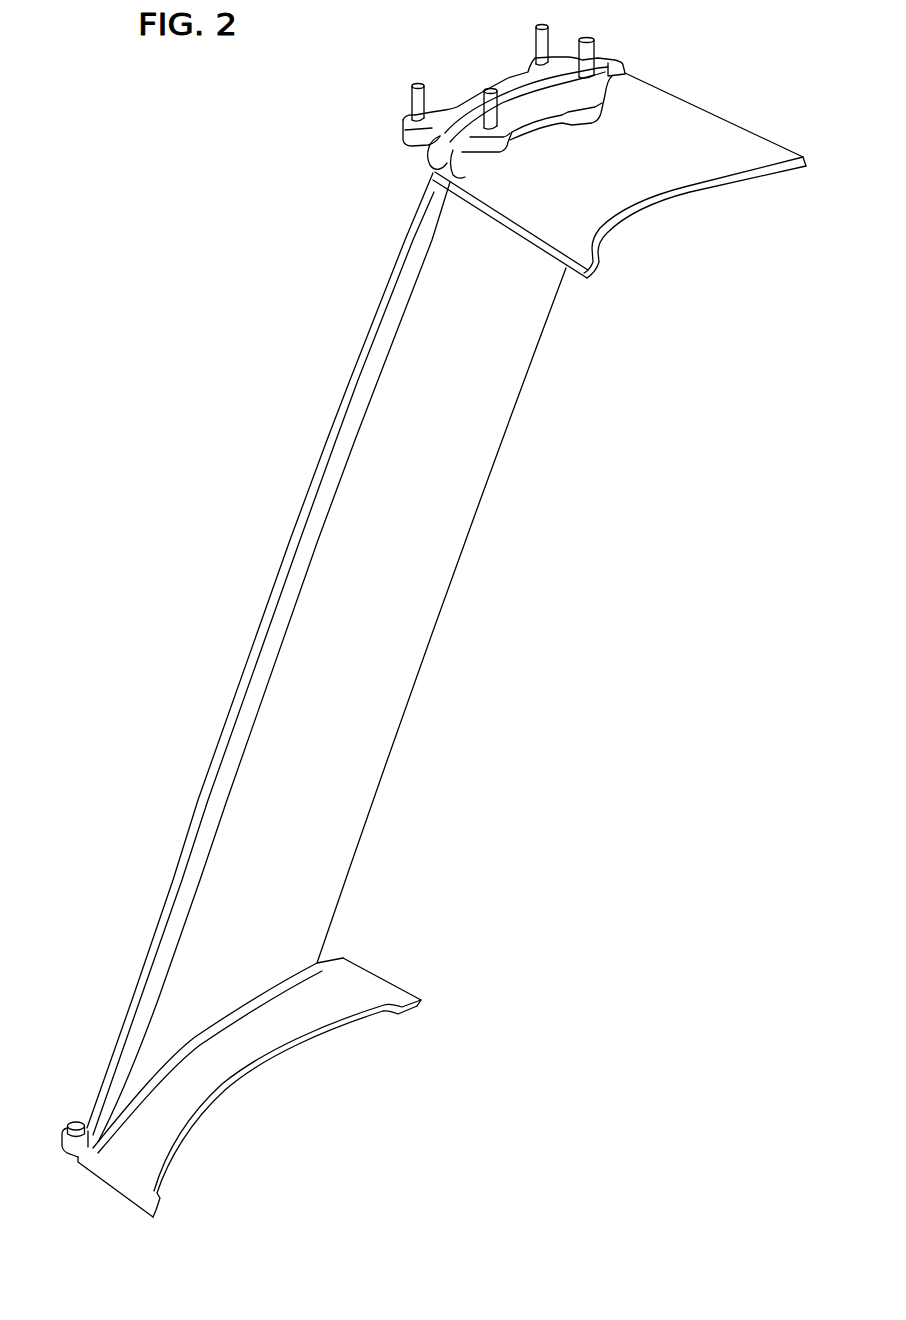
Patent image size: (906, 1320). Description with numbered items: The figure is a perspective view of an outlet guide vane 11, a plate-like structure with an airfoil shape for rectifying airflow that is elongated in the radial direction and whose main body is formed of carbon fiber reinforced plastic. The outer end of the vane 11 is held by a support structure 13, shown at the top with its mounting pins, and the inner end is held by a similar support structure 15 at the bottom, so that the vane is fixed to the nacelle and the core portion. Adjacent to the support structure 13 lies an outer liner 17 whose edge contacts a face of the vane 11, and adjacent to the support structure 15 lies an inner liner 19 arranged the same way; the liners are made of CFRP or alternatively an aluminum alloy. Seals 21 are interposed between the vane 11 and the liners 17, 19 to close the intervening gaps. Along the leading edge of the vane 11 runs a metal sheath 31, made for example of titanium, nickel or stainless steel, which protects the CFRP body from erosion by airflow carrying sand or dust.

The vane 11 is at (220, 277).
The support structure 13 is at (403, 138).
The support structure 15 is at (67, 1149).
The outer liner 17 is at (680, 178).
The inner liner 19 is at (220, 1073).
The seal 21 is at (260, 993).
The sheath 31 is at (262, 607).